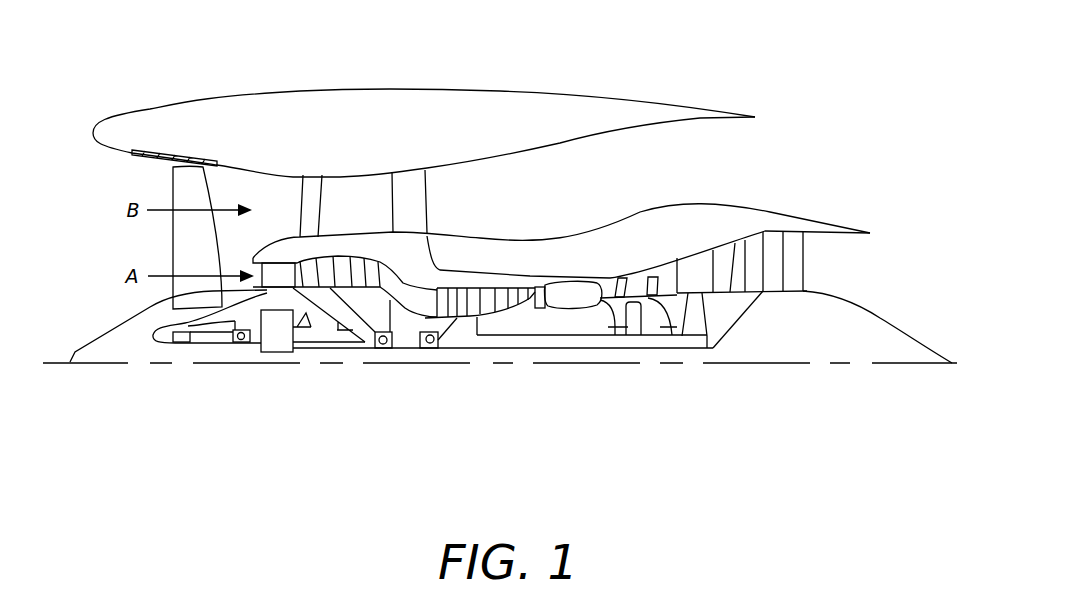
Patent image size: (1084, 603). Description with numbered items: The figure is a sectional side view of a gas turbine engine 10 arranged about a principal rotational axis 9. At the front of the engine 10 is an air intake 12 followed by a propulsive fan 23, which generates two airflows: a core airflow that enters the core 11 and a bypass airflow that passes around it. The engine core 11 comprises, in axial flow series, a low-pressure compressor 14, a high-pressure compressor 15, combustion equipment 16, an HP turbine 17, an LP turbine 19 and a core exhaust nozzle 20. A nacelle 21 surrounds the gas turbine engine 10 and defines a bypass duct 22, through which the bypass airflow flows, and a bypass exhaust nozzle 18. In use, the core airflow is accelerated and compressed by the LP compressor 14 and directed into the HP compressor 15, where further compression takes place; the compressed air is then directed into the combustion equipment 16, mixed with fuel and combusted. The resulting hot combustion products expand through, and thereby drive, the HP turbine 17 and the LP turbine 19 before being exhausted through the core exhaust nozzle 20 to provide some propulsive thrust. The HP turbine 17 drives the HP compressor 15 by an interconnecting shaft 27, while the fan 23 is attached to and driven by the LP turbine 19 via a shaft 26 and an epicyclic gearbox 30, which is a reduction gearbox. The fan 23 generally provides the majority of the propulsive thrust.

The principal rotational axis 9 is at (753, 365).
The gas turbine engine 10 is at (148, 111).
The core 11 is at (571, 255).
The air intake 12 is at (120, 181).
The low-pressure compressor 14 is at (347, 263).
The high-pressure compressor 15 is at (493, 300).
The combustion equipment 16 is at (572, 300).
The HP turbine 17 is at (633, 283).
The bypass exhaust nozzle 18 is at (755, 157).
The LP turbine 19 is at (773, 250).
The core exhaust nozzle 20 is at (843, 263).
The nacelle 21 is at (405, 103).
The bypass duct 22 is at (696, 167).
The propulsive fan 23 is at (180, 225).
The shaft 26 is at (488, 355).
The interconnecting shaft 27 is at (533, 340).
The epicyclic gearbox 30 is at (273, 343).